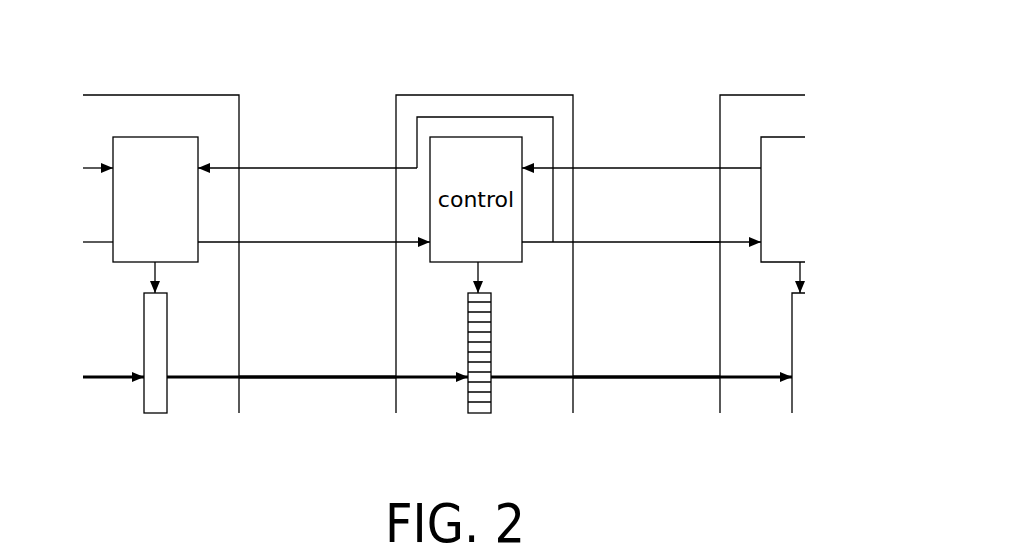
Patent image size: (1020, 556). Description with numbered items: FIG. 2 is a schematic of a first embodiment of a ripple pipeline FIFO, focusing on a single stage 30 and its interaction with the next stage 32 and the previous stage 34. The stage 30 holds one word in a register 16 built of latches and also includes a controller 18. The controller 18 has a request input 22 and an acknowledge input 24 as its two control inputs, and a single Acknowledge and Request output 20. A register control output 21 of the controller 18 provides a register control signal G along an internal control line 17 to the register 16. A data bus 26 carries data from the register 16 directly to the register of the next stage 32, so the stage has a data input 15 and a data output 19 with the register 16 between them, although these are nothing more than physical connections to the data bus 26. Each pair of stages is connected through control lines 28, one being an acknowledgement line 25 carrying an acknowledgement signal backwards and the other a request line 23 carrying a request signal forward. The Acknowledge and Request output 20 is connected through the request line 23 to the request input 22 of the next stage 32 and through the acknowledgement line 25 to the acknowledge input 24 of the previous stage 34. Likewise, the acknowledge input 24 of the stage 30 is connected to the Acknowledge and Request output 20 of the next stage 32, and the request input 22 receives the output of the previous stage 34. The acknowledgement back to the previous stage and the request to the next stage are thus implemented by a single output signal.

The previous stage 34 is at (128, 95).
The single stage 30 is at (481, 95).
The next stage 32 is at (815, 103).
The controller 18 is at (155, 199).
The register 16 is at (144, 332).
The internal control line 17 is at (482, 268).
The register control output 21 is at (478, 266).
The control lines 28 is at (281, 168).
The request input 22 is at (393, 244).
The acknowledge input 24 is at (573, 168).
The acknowledgement line 25 is at (675, 168).
The Acknowledge and Request output 20 is at (573, 244).
The request line 23 is at (690, 244).
The data bus 26 is at (290, 380).
The data input 15 is at (393, 380).
The data output 19 is at (573, 380).